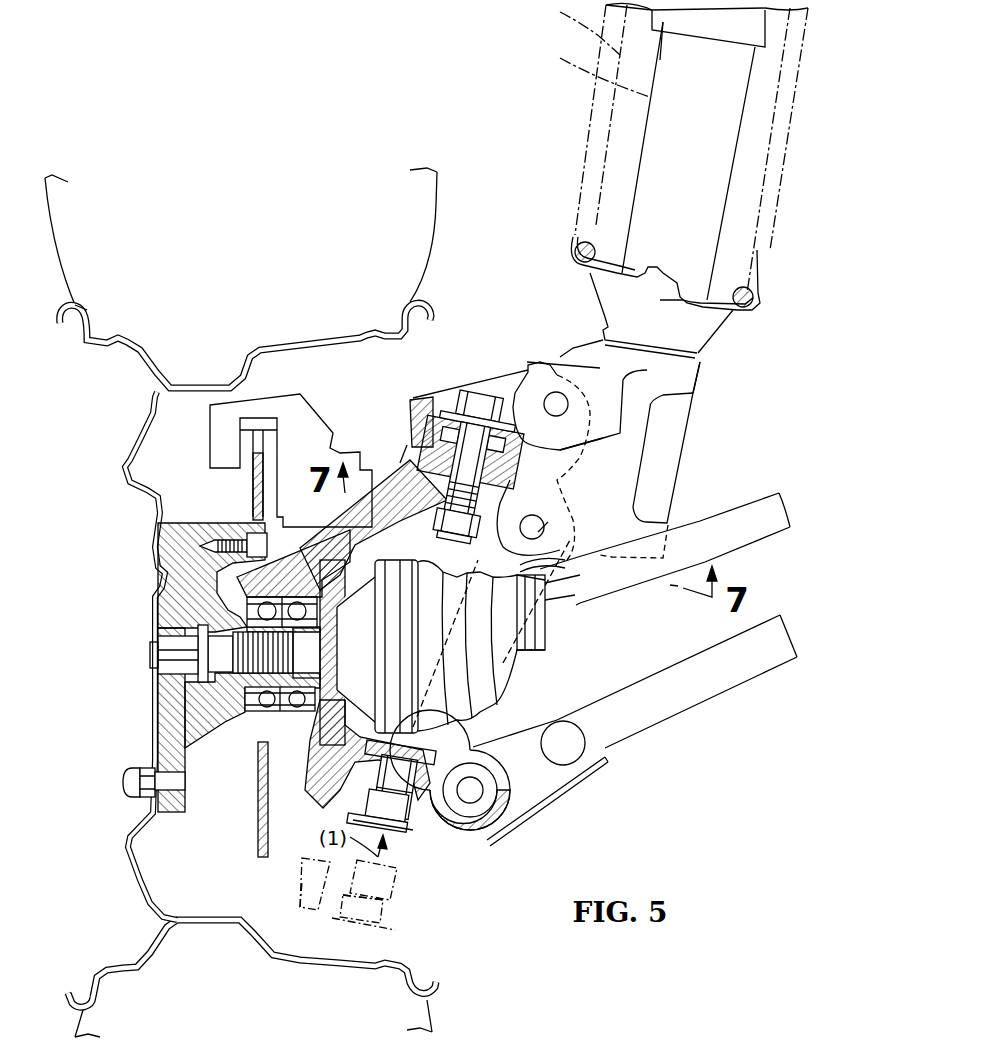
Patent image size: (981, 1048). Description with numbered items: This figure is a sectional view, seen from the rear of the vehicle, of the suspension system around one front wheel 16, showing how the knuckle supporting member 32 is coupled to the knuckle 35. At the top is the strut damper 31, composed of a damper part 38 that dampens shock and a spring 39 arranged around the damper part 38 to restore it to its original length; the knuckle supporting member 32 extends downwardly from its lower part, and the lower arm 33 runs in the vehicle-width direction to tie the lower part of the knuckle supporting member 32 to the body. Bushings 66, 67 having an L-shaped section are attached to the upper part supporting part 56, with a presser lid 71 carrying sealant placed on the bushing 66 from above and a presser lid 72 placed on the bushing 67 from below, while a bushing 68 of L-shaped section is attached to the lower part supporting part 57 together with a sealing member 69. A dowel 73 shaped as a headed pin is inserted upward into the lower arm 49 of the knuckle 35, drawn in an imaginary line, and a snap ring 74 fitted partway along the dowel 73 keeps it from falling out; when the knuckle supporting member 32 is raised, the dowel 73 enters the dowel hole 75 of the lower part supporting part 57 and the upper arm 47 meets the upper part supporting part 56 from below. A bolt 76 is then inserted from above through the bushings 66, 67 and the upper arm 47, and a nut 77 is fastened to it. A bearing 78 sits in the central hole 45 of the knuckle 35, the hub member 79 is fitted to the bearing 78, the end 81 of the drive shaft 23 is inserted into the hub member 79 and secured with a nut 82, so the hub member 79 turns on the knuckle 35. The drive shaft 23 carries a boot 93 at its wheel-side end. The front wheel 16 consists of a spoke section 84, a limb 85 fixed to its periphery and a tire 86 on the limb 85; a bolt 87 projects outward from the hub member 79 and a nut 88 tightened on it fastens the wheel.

The front wheel 16 is at (340, 160).
The drive shaft 23 is at (750, 540).
The strut damper 31 is at (586, 125).
The knuckle supporting member 32 is at (512, 362).
The lower arm 33 is at (698, 705).
The knuckle 35 is at (320, 912).
The damper part 38 is at (655, 95).
The spring 39 is at (598, 30).
The central hole 45 is at (245, 698).
The upper arm 47 is at (540, 530).
The lower arm 49 is at (298, 900).
The upper part supporting part 56 is at (423, 392).
The lower part supporting part 57 is at (355, 758).
The bushing 66 is at (637, 440).
The bushing 67 is at (560, 467).
The bushing 68 is at (500, 830).
The sealing member 69 is at (450, 835).
The presser lid 71 is at (560, 377).
The presser lid 72 is at (540, 497).
The dowel 73 is at (398, 837).
The snap ring 74 is at (397, 908).
The dowel hole 75 is at (403, 763).
The bolt 76 is at (482, 387).
The nut 77 is at (533, 550).
The bearing 78 is at (247, 610).
The hub member 79 is at (193, 730).
The end 81 is at (212, 653).
The nut 82 is at (180, 667).
The spoke section 84 is at (158, 548).
The limb 85 is at (113, 347).
The tire 86 is at (437, 236).
The bolt 87 is at (157, 787).
The nut 88 is at (125, 787).
The boot 93 is at (525, 672).